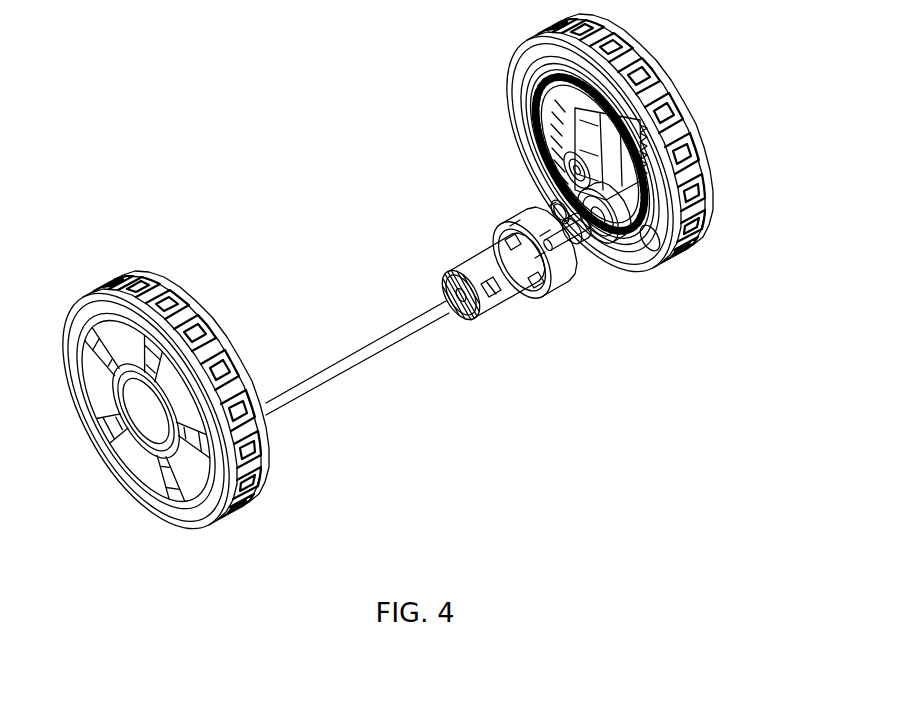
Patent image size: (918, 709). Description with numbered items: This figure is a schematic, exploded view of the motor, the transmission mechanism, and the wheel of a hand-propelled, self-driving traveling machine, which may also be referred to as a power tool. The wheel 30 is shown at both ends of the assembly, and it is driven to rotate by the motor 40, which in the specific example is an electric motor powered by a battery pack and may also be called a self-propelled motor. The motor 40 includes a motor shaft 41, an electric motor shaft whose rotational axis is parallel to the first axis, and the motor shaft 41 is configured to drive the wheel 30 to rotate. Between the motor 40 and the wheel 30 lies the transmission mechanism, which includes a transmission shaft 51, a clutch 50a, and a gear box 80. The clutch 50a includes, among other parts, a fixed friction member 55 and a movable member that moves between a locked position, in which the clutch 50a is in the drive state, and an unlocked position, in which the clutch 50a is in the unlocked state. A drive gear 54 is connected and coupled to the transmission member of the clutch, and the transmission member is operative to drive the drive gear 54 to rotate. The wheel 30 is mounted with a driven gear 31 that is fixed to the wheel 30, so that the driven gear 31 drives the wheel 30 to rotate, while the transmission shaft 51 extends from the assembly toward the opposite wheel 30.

The wheel 30 is at (697, 258).
The driven gear 31 is at (505, 92).
The motor 40 is at (502, 323).
The motor shaft 41 is at (456, 315).
The clutch 50a is at (663, 252).
The transmission shaft 51 is at (349, 371).
The drive gear 54 is at (547, 204).
The fixed friction member 55 is at (601, 269).
The gear box 80 is at (557, 300).